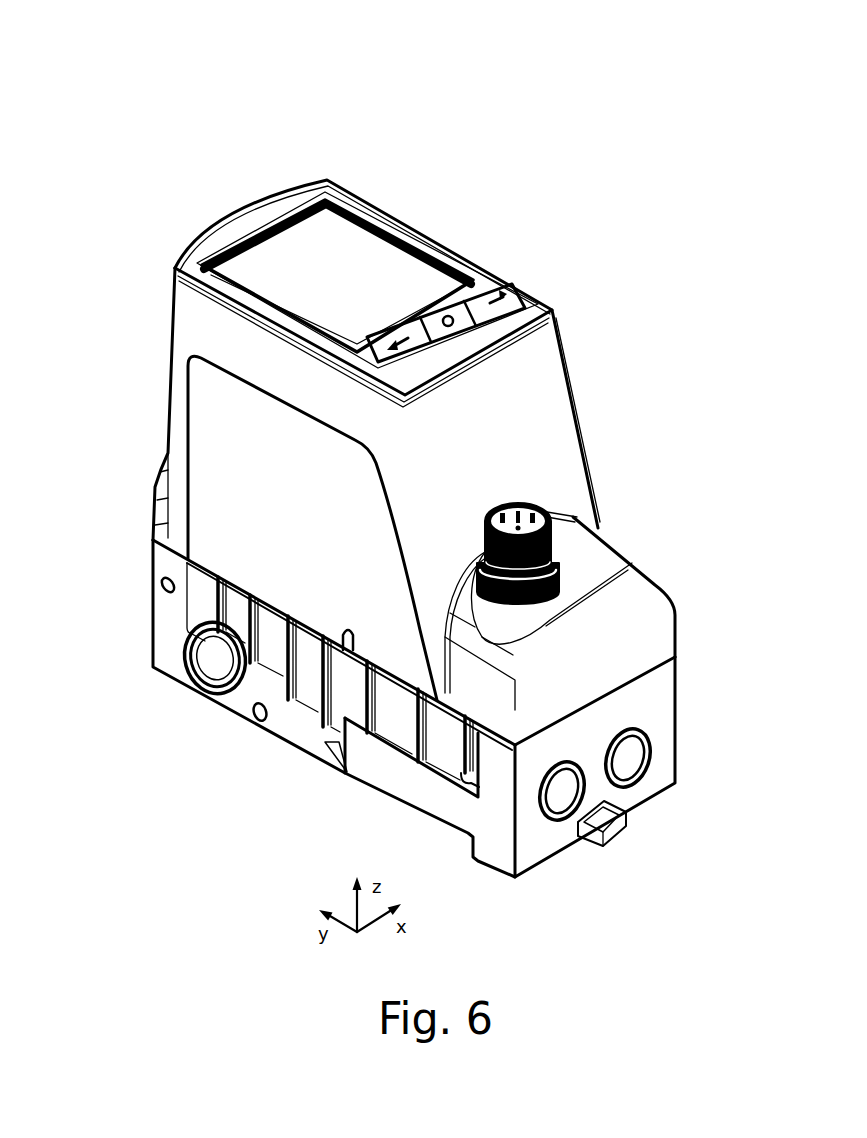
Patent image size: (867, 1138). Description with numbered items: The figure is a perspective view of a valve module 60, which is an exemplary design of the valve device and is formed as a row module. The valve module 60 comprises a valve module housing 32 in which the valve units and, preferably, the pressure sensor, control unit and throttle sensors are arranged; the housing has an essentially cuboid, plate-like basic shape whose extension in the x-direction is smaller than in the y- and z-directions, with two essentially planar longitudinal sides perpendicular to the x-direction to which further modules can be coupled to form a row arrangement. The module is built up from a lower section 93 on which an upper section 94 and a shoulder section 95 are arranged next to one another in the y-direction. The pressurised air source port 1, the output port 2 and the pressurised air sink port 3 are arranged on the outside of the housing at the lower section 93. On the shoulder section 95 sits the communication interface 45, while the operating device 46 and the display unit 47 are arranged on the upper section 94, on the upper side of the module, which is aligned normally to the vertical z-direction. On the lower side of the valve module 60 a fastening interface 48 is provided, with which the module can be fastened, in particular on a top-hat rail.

The valve module 60 is at (188, 112).
The valve module housing 32 is at (142, 292).
The upper section 94 is at (165, 395).
The lower section 93 is at (148, 600).
The display unit 47 is at (363, 233).
The operating device 46 is at (447, 313).
The communication interface 45 is at (527, 513).
The shoulder section 95 is at (683, 593).
The fastening interface 48 is at (395, 805).
The pressurised air source port 1 is at (220, 663).
The output port 2 is at (628, 762).
The pressurised air sink port 3 is at (555, 800).